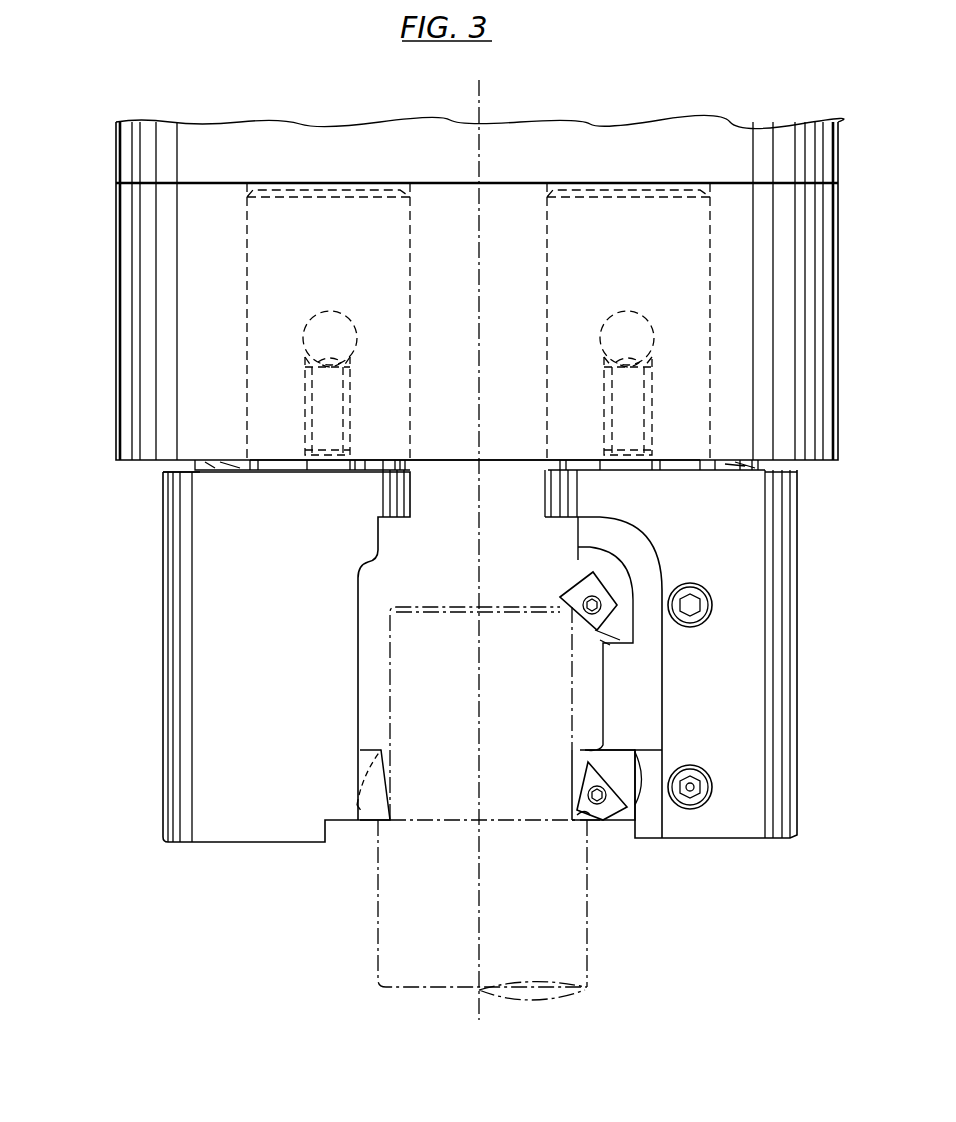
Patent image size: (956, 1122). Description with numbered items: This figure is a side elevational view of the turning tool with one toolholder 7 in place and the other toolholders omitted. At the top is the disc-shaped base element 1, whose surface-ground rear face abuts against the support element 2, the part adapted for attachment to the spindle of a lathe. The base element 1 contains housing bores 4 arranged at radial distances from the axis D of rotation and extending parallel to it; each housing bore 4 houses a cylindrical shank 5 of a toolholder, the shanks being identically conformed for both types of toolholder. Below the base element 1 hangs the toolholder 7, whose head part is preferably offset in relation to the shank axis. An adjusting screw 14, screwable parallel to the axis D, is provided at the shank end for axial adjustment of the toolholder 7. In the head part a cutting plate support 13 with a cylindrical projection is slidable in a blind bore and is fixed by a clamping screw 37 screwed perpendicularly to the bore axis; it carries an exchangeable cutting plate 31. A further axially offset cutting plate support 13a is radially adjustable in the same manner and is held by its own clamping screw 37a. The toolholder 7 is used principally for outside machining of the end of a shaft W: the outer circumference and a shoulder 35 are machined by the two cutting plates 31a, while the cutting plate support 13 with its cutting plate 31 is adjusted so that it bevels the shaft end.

The base element 1 is at (762, 205).
The support element 2 is at (603, 135).
The housing bore 4 is at (703, 200).
The cylindrical shank 5 is at (563, 230).
The toolholder 7 is at (159, 571).
The cutting plate support 13 is at (368, 805).
The axially offset cutting plate support 13a is at (630, 822).
The adjusting screw 14 is at (195, 465).
The cutting plate 31 is at (575, 595).
The cutting plate 31a is at (614, 812).
The shoulder 35 is at (593, 822).
The clamping screw 37 is at (695, 605).
The clamping screw 37a is at (695, 787).
The axis of rotation D is at (482, 98).
The shaft W is at (393, 930).